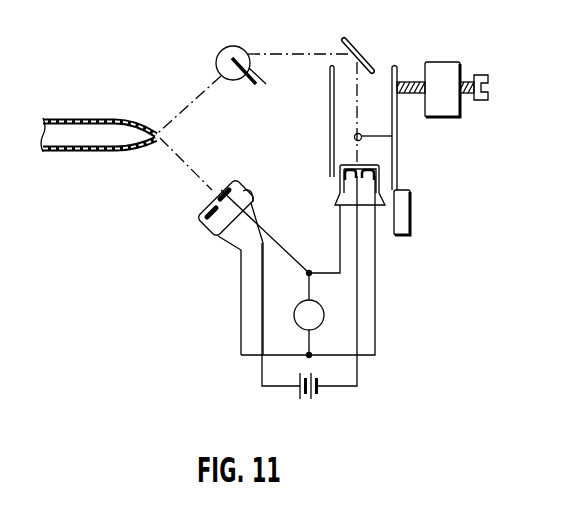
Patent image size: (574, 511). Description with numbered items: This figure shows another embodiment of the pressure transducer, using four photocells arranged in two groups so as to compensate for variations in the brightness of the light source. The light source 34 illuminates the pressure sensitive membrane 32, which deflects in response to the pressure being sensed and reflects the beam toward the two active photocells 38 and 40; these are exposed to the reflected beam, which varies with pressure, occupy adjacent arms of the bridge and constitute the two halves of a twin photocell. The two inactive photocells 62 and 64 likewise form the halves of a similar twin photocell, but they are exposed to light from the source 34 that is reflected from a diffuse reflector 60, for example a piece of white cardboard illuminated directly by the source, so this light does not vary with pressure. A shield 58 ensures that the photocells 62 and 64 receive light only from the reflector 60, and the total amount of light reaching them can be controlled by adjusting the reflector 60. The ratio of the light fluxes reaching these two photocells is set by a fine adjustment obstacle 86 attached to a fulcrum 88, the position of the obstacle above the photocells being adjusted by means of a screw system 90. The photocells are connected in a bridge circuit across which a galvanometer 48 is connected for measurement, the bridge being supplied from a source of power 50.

The pressure sensitive membrane 32 is at (157, 130).
The light source 34 is at (240, 47).
The photocell 38 is at (201, 215).
The photocell 40 is at (231, 184).
The galvanometer 48 is at (318, 300).
The source of power 50 is at (310, 396).
The shield 58 is at (330, 88).
The diffuse reflector 60 is at (352, 38).
The photocell 62 is at (348, 170).
The photocell 64 is at (381, 177).
The fine adjustment obstacle 86 is at (359, 132).
The fulcrum 88 is at (399, 190).
The screw system 90 is at (470, 78).